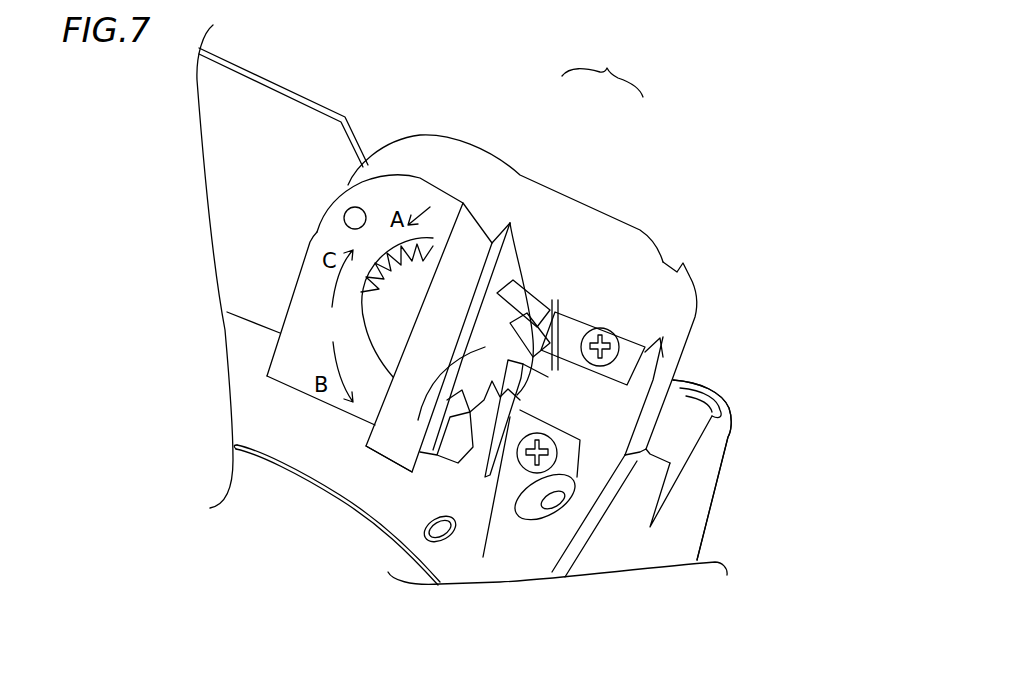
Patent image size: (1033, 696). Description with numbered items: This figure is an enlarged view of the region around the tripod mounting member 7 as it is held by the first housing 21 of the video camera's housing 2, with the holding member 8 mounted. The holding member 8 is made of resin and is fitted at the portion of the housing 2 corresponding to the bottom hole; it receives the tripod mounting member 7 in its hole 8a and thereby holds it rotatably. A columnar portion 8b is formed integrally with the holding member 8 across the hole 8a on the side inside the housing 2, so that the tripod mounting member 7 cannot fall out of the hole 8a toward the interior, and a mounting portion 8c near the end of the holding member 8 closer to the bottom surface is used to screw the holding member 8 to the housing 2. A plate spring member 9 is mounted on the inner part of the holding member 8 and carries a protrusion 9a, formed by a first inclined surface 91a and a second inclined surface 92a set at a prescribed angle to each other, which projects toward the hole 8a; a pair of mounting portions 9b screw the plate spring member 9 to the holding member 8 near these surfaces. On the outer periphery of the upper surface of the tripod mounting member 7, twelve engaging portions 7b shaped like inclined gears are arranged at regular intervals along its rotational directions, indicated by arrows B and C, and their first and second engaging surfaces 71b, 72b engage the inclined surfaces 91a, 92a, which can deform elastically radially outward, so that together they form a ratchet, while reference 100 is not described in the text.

The housing 2 is at (640, 503).
The first housing 21 is at (702, 470).
The tripod mounting member 7 is at (412, 430).
The engaging portion 7b is at (392, 400).
The first engaging surface 71b is at (452, 445).
The second engaging surface 72b is at (290, 386).
The holding member 8 is at (430, 147).
The hole 8a is at (511, 222).
The columnar portion 8b is at (464, 243).
The mounting portion 8c is at (361, 208).
The plate spring member 9 is at (513, 477).
The protrusion 9a is at (602, 69).
The first inclined surface 91a is at (553, 357).
The second inclined surface 92a is at (567, 333).
The mounting portion 9b is at (663, 262).
The cover 100 is at (292, 238).